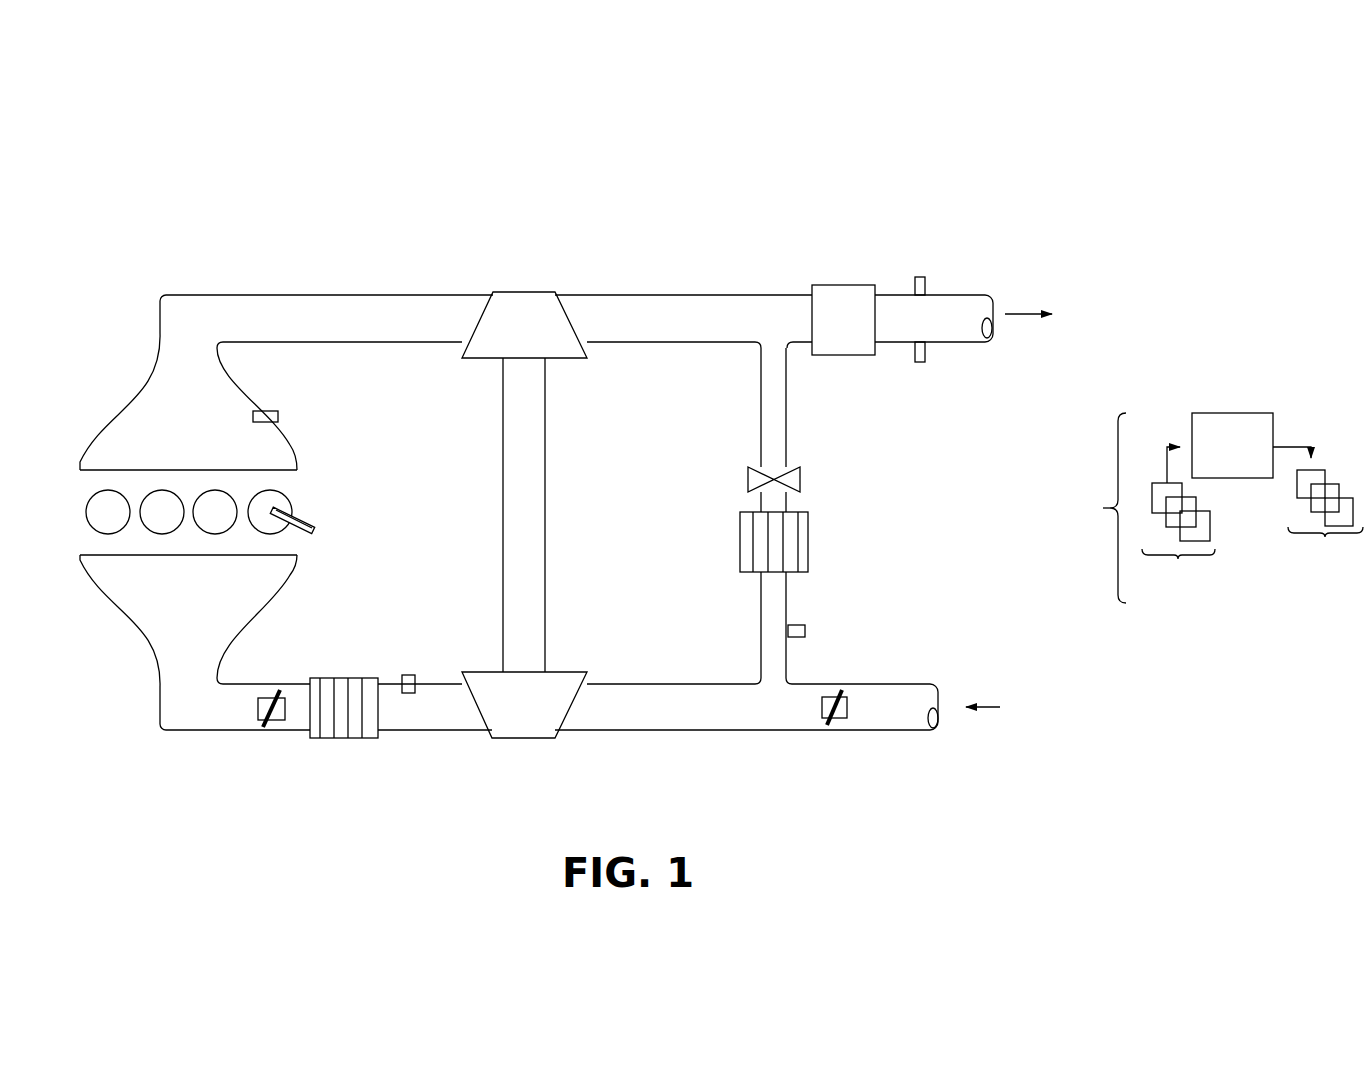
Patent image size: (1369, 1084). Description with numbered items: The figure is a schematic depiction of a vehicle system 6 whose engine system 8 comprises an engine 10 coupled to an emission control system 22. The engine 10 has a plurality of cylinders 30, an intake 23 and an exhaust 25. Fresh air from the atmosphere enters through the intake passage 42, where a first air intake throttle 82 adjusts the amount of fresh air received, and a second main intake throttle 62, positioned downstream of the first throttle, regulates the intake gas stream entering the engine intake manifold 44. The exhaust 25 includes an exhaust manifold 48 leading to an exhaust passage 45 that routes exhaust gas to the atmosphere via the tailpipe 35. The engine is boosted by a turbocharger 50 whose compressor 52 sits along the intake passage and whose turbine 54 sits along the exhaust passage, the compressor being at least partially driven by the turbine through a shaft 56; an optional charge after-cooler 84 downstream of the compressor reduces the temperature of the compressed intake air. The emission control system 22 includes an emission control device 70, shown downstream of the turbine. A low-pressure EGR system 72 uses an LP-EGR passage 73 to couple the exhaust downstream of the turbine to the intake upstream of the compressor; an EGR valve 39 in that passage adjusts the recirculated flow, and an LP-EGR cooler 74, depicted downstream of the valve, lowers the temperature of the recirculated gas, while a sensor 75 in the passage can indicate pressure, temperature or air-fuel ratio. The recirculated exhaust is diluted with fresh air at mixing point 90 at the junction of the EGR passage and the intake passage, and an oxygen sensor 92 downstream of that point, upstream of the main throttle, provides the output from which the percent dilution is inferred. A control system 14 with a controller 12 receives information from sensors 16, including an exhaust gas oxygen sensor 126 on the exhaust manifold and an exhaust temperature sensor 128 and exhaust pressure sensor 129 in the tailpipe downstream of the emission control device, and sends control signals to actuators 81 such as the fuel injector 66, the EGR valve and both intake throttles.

The vehicle system 6 is at (1190, 202).
The engine system 8 is at (120, 286).
The engine 10 is at (214, 497).
The controller 12 is at (1232, 445).
The control system 14 is at (1201, 508).
The sensors 16 is at (1178, 524).
The emission control system 22 is at (868, 260).
The intake 23 is at (197, 787).
The exhaust 25 is at (222, 252).
The cylinders 30 is at (103, 493).
The tailpipe 35 is at (985, 296).
The EGR valve 39 is at (800, 476).
The intake passage 42 is at (903, 684).
The intake manifold 44 is at (195, 642).
The exhaust passage 45 is at (255, 295).
The exhaust manifold 48 is at (286, 382).
The turbocharger 50 is at (536, 514).
The compressor 52 is at (530, 740).
The turbine 54 is at (530, 292).
The shaft 56 is at (546, 549).
The second main intake throttle 62 is at (258, 710).
The fuel injector 66 is at (305, 517).
The emission control device 70 is at (715, 320).
The low-pressure EGR system 72 is at (862, 484).
The LP-EGR passage 73 is at (762, 432).
The LP-EGR cooler 74 is at (810, 541).
The EGR sensor 75 is at (800, 625).
The actuators 81 is at (1318, 514).
The first air intake throttle 82 is at (848, 709).
The charge after-cooler 84 is at (338, 678).
The mixing point 90 is at (773, 712).
The oxygen sensor 92 is at (413, 675).
The exhaust gas oxygen sensor 126 is at (255, 411).
The exhaust temperature sensor 128 is at (922, 360).
The exhaust pressure sensor 129 is at (922, 280).